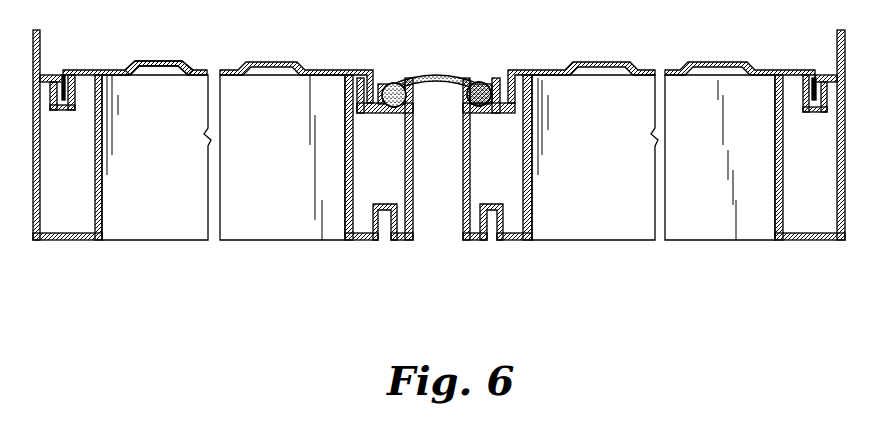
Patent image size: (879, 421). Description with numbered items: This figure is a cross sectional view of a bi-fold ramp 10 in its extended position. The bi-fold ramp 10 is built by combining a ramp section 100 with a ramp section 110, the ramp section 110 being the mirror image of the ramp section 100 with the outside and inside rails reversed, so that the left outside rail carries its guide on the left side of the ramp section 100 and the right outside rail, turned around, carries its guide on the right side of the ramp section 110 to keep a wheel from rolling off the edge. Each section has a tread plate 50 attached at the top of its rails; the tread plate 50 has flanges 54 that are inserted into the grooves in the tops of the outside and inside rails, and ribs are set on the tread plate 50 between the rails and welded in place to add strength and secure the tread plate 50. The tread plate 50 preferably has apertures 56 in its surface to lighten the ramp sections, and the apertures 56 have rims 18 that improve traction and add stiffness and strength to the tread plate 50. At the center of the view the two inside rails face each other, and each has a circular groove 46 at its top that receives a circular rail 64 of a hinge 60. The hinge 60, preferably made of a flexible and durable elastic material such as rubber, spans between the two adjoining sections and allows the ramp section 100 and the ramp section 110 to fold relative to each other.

The bi-fold ramp 10 is at (439, 201).
The rims 18 is at (189, 67).
The circular groove 46 is at (492, 112).
The tread plate 50 is at (323, 70).
The flange 54 is at (505, 70).
The apertures 56 is at (166, 70).
The hinge 60 is at (432, 76).
The circular rail 64 is at (470, 82).
The ramp section 100 is at (223, 166).
The ramp section 110 is at (636, 166).